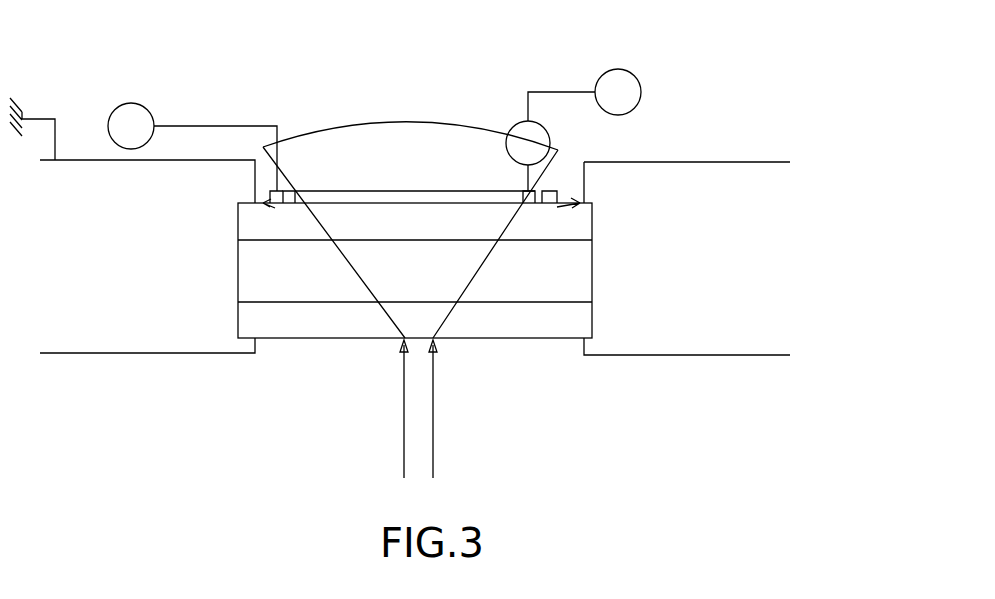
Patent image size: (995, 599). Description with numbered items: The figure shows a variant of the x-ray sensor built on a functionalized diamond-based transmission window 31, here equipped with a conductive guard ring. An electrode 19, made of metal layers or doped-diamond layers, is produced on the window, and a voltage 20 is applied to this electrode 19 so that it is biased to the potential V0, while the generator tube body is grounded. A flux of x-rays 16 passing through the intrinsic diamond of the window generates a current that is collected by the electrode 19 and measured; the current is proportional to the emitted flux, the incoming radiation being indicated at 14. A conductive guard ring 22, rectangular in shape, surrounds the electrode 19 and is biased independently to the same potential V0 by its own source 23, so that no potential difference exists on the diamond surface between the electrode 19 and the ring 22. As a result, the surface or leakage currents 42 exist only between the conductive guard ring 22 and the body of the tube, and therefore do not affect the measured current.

The incident light beam 14 is at (433, 410).
The flux of x-rays 16 is at (418, 122).
The electrode 19 is at (360, 191).
The voltage 20 is at (558, 90).
The conductive guard ring 22 is at (290, 191).
The voltage source 23 is at (200, 125).
The functionalized diamond-based transmission window 31 is at (607, 183).
The surface currents (leakage currents) 42 is at (566, 207).